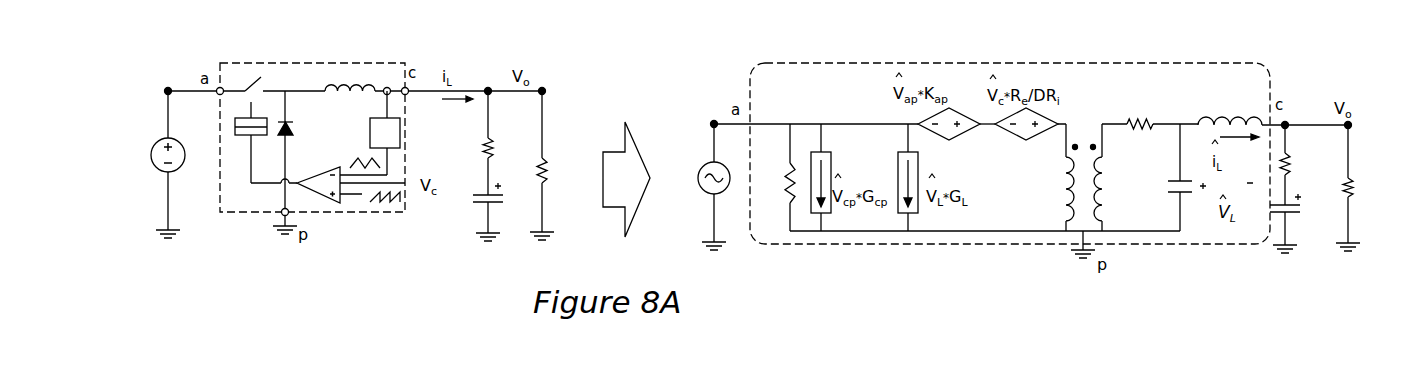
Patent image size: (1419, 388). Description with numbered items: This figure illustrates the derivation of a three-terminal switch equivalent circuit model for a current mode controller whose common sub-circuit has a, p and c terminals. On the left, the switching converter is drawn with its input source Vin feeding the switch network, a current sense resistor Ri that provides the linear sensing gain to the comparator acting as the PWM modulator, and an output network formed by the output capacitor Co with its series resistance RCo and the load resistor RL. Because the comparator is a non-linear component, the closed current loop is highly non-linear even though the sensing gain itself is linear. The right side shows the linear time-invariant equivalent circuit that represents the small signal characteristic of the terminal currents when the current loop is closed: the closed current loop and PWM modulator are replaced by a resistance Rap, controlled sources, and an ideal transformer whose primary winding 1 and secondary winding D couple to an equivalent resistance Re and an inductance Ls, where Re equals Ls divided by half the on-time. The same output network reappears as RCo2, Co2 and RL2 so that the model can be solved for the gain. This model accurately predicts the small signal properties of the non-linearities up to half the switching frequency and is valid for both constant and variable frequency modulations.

The input voltage source Vin is at (149, 164).
The current sense resistor Ri is at (385, 133).
The output capacitor ESR RCo is at (501, 143).
The output capacitor Co is at (497, 212).
The load resistor RL is at (549, 165).
The small-signal resistance Rap is at (774, 177).
The transformer primary winding 1 is at (1062, 177).
The transformer secondary winding (ratio D) D is at (1109, 177).
The equivalent resistance Re is at (1162, 140).
The inductance Ls is at (1230, 110).
The output capacitor ESR (model) RCo2 is at (1298, 165).
The output capacitor (model) Co2 is at (1295, 223).
The load resistor (model) RL2 is at (1353, 188).